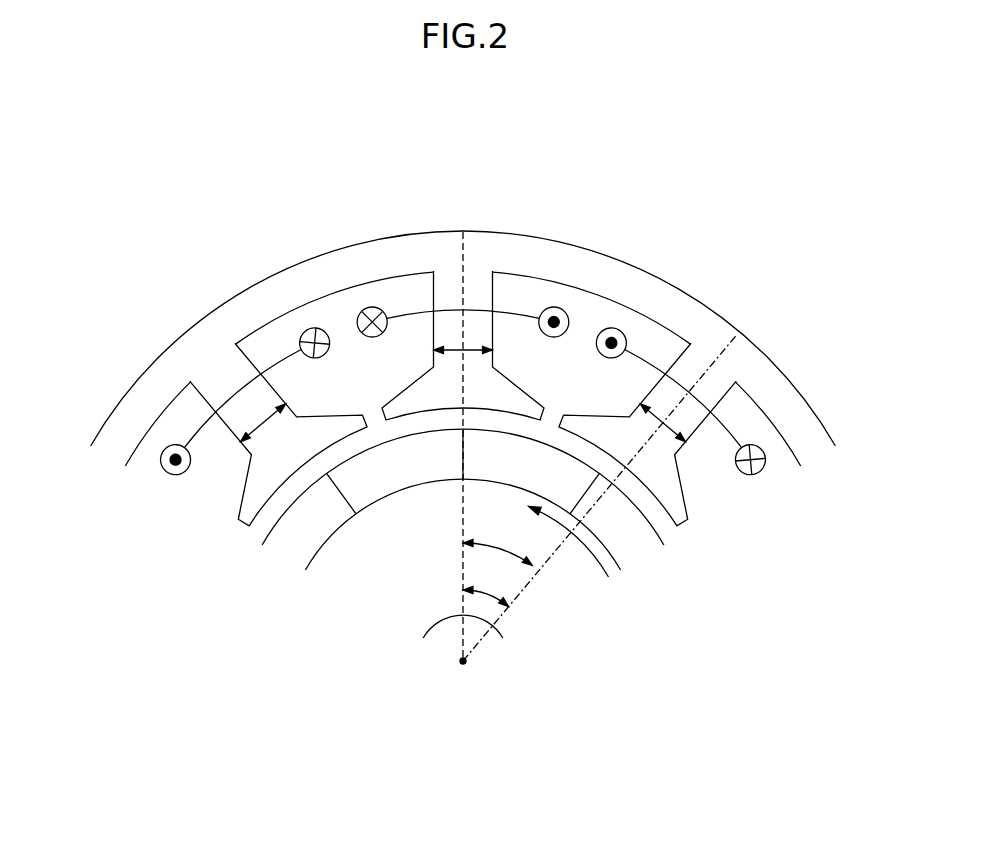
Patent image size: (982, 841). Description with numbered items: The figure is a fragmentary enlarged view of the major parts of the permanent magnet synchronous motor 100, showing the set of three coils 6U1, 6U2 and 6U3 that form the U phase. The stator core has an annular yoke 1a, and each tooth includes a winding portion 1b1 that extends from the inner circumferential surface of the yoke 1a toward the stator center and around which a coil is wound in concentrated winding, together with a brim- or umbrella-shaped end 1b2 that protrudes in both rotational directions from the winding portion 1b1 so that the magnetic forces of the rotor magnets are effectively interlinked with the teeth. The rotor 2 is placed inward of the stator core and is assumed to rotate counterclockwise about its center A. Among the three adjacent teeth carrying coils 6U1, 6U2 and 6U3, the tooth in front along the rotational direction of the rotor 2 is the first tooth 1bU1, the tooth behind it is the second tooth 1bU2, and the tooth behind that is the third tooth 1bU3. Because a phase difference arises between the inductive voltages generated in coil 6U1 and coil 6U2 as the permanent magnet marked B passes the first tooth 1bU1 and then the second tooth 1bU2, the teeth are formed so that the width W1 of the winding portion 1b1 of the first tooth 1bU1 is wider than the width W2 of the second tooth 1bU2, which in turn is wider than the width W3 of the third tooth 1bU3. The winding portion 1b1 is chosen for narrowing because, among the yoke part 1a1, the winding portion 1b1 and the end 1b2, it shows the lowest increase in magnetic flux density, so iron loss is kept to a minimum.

The permanent magnet synchronous motor 100 is at (447, 131).
The yoke 1a is at (588, 246).
The yoke part 1a1 is at (480, 252).
The winding portion 1b1 is at (478, 332).
The end 1b2 is at (493, 392).
The first tooth 1bU1 is at (803, 490).
The second tooth 1bU2 is at (730, 207).
The third tooth 1bU3 is at (124, 490).
The coil 6U1 is at (733, 430).
The coil 6U2 is at (505, 302).
The coil 6U3 is at (283, 360).
The rotor 2 is at (370, 589).
The rotation center axis A is at (462, 666).
The permanent magnet B is at (637, 556).
The width of winding portion of first tooth W1 is at (659, 426).
The width of winding portion of second tooth W2 is at (463, 368).
The width of winding portion of third tooth W3 is at (267, 426).